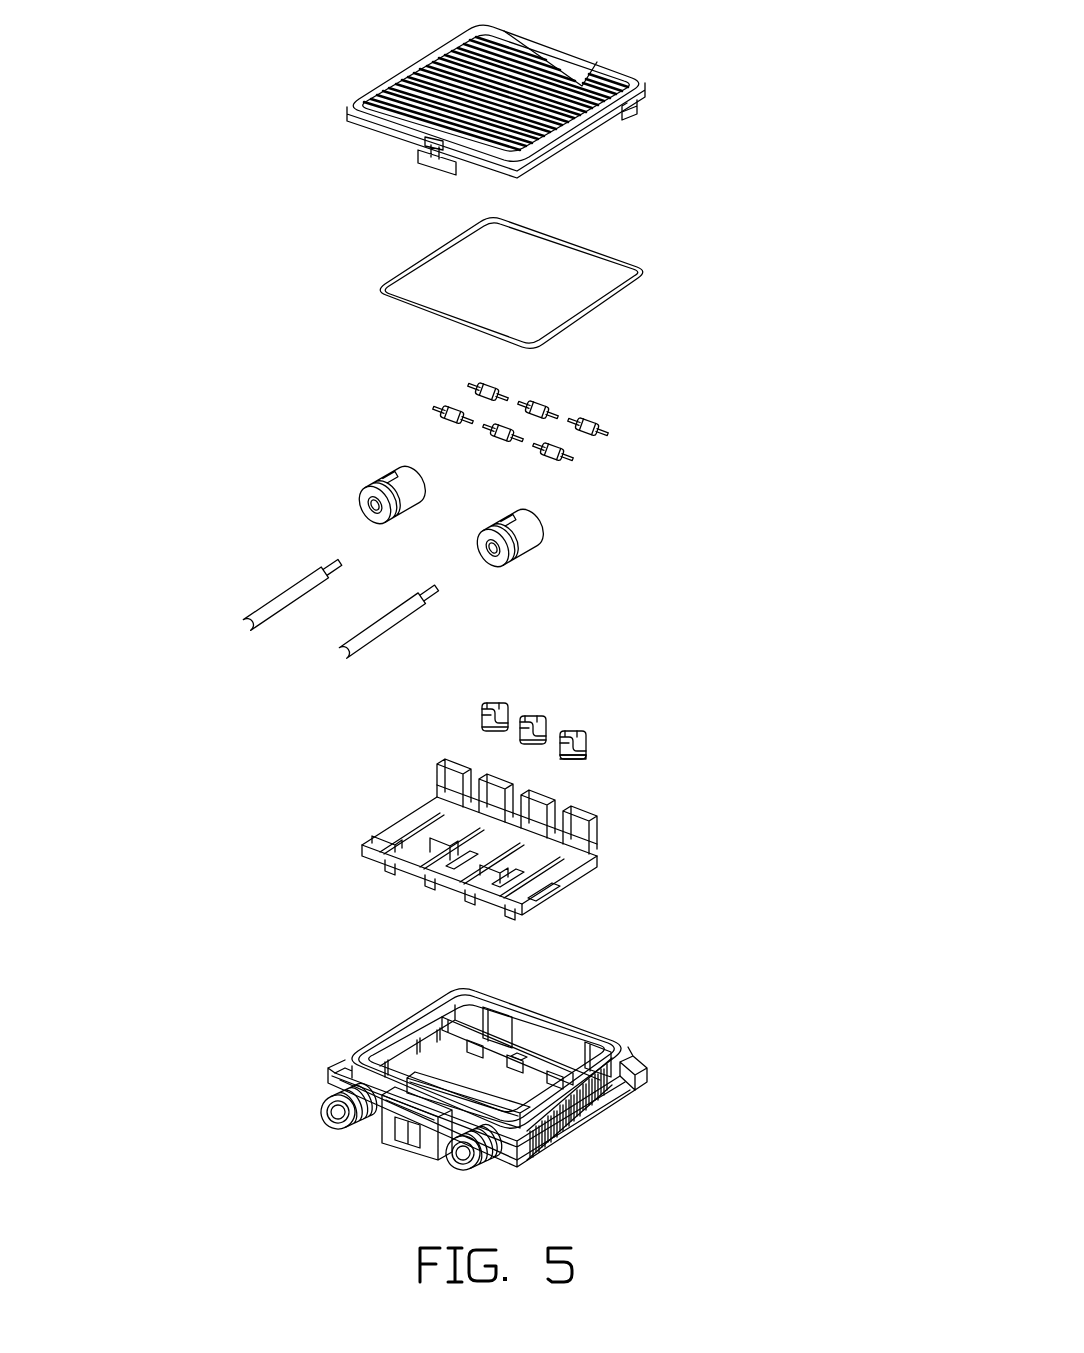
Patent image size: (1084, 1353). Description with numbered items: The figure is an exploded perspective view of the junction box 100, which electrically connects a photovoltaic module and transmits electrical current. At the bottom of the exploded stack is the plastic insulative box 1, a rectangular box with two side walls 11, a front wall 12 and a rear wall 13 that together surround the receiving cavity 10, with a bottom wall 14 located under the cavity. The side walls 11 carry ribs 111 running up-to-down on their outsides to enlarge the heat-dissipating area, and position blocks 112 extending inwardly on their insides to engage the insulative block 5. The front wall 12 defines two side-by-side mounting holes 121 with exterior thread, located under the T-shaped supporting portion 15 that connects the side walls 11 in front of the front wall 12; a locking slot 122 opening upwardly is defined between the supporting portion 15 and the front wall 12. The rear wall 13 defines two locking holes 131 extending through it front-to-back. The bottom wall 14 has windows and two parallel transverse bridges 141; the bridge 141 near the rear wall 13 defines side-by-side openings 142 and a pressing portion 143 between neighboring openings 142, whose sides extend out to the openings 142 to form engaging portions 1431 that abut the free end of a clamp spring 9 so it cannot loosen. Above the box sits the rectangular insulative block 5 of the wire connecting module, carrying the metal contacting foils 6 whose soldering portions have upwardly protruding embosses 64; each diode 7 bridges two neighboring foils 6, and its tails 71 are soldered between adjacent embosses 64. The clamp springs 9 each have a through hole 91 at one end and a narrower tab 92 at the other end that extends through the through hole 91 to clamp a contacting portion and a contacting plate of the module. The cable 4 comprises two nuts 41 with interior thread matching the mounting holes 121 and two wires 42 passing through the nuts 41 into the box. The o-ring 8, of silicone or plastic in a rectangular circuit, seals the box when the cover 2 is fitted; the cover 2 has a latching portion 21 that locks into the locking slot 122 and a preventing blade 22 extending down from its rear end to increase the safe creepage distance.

The junction box 100 is at (710, 43).
The insulative box 1 is at (476, 1081).
The cover 2 is at (518, 95).
The latching portion 21 is at (415, 155).
The preventing blade 22 is at (636, 112).
The cable 4 is at (355, 535).
The nut 41 is at (360, 466).
The wire 42 is at (312, 594).
The insulative block 5 is at (505, 839).
The contacting foil 6 is at (545, 880).
The emboss 64 is at (425, 800).
The diode 7 is at (500, 406).
The tail 71 is at (597, 426).
The o-ring 8 is at (410, 245).
The clamp spring 9 is at (525, 707).
The through hole 91 is at (575, 730).
The tab 92 is at (595, 750).
The receiving cavity 10 is at (465, 1003).
The side wall 11 is at (617, 1098).
The rib 111 is at (582, 1128).
The position block 112 is at (438, 1032).
The front wall 12 is at (490, 1170).
The mounting hole 121 is at (322, 1118).
The locking slot 122 is at (335, 1071).
The rear wall 13 is at (570, 1012).
The locking hole 131 is at (500, 1020).
The bottom wall 14 is at (405, 1070).
The bridge 141 is at (545, 1150).
The opening 142 is at (636, 1068).
The pressing portion 143 is at (522, 1052).
The engaging portion 1431 is at (560, 1062).
The supporting portion 15 is at (410, 1150).